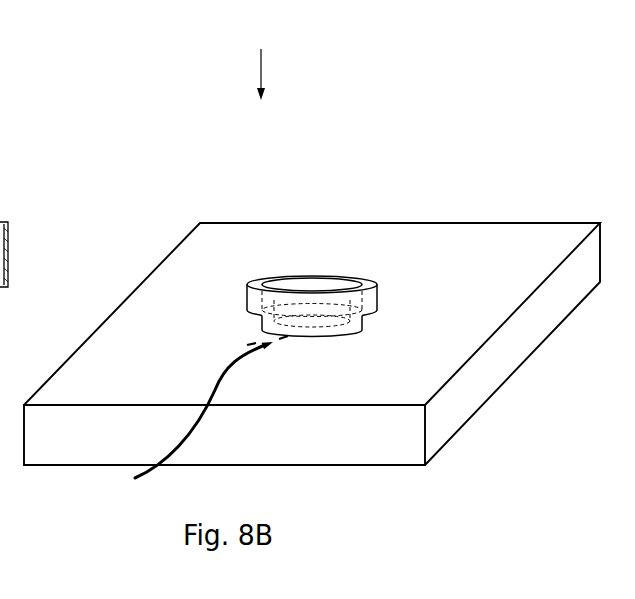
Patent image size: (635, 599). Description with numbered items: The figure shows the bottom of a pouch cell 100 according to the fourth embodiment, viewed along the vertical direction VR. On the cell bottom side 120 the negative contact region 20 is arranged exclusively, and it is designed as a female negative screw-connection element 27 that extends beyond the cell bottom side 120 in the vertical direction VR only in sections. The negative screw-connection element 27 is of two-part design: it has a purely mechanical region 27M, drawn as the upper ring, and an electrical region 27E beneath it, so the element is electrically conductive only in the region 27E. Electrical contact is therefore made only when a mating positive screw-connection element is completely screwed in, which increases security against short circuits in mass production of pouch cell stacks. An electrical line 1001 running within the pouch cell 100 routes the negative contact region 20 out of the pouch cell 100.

The pouch cell 100 is at (18, 184).
The vertical direction VR is at (262, 70).
The cell bottom side 120 is at (175, 275).
The negative screw-connection element 27 is at (389, 319).
The negative contact region 20 is at (389, 319).
The purely mechanical region 27M is at (378, 289).
The electrical region 27E is at (324, 332).
The electrical line 1001 is at (175, 422).